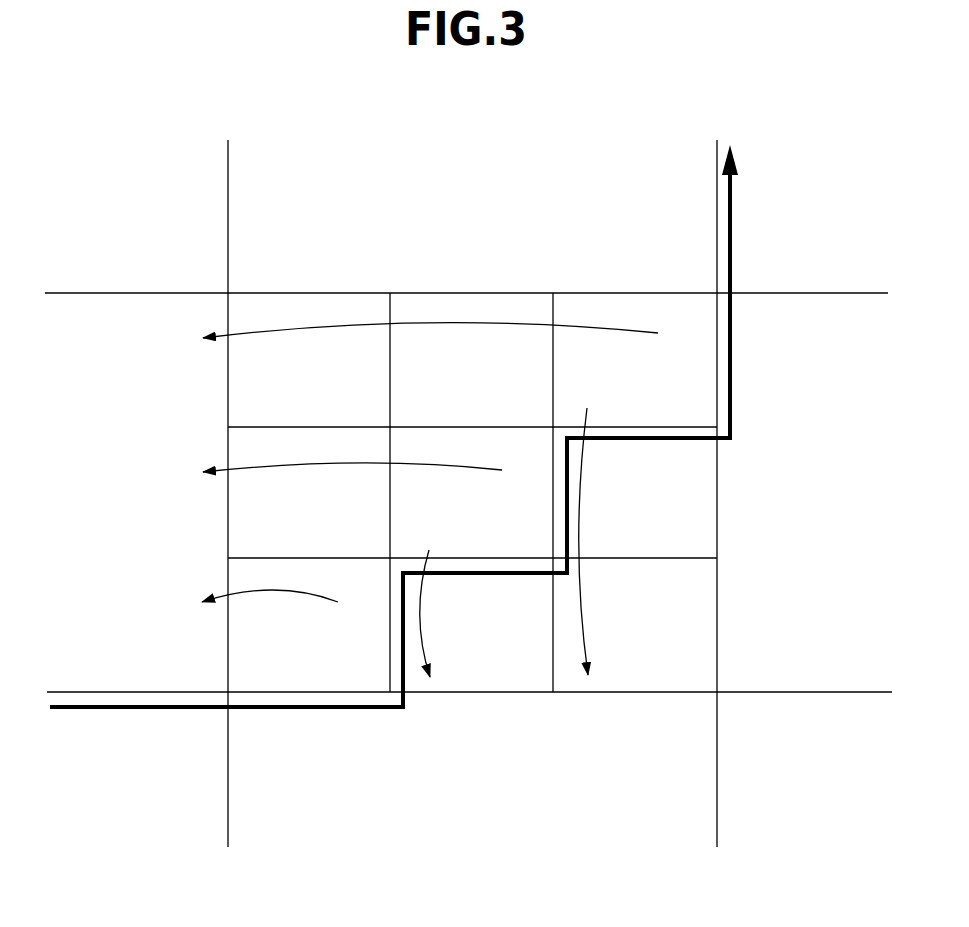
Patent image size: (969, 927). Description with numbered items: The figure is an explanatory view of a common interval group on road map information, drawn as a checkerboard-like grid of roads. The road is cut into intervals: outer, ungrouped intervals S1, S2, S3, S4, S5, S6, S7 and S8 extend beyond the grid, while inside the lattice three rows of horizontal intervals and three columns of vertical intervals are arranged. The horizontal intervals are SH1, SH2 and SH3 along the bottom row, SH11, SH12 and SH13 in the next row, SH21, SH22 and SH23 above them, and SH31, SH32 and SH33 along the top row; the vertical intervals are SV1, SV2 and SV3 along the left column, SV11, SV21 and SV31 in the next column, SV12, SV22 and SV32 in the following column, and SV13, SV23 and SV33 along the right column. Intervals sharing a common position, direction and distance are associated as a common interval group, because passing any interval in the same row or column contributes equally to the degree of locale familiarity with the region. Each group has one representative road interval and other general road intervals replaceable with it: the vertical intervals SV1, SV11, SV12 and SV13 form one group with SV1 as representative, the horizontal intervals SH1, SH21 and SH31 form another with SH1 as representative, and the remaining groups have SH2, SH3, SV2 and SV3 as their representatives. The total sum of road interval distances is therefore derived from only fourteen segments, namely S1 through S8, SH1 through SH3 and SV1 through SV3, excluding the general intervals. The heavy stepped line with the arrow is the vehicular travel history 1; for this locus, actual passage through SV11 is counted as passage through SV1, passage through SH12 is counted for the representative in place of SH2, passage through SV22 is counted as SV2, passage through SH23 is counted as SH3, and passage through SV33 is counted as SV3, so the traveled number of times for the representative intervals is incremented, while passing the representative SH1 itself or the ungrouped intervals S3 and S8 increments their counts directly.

The vehicular travel history 1 is at (390, 474).
The road interval S1 is at (207, 769).
The road interval S2 is at (695, 769).
The road interval S3 is at (137, 677).
The road interval S4 is at (804, 677).
The road interval S5 is at (136, 279).
The road interval S6 is at (802, 278).
The road interval S7 is at (206, 216).
The road interval S8 is at (693, 216).
The representative road interval SH1 is at (309, 678).
The representative road interval SH2 is at (471, 678).
The representative road interval SH3 is at (635, 678).
The general road interval SH11 is at (309, 544).
The general road interval SH12 is at (500, 553).
The general road interval SH13 is at (635, 543).
The general road interval SH21 is at (309, 411).
The general road interval SH22 is at (471, 411).
The general road interval SH23 is at (603, 418).
The general road interval SH31 is at (309, 279).
The general road interval SH32 is at (471, 279).
The general road interval SH33 is at (635, 278).
The representative road interval SV1 is at (198, 625).
The representative road interval SV2 is at (198, 492).
The representative road interval SV3 is at (198, 360).
The general road interval SV11 is at (308, 632).
The general road interval SV12 is at (514, 625).
The general road interval SV13 is at (678, 625).
The general road interval SV21 is at (349, 492).
The general road interval SV22 is at (471, 499).
The general road interval SV23 is at (677, 492).
The general road interval SV31 is at (349, 360).
The general road interval SV32 is at (513, 360).
The general road interval SV33 is at (635, 365).